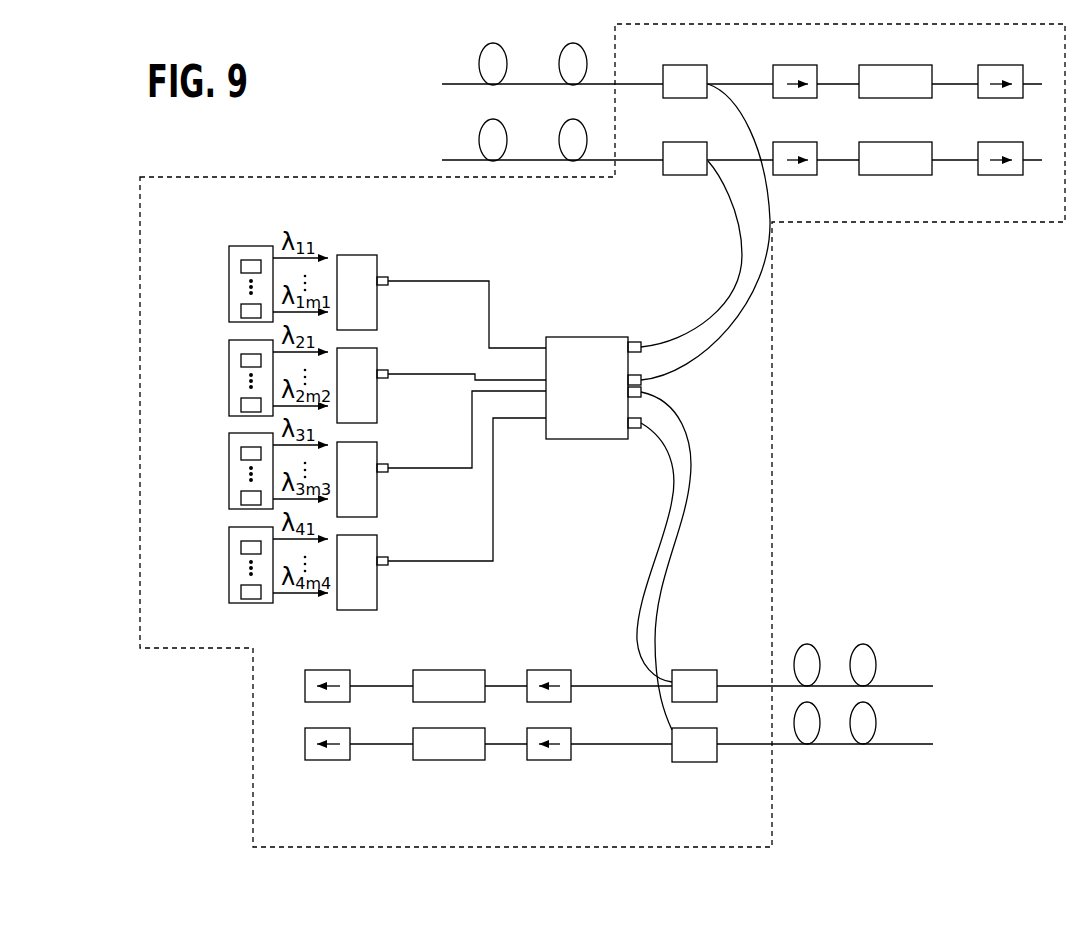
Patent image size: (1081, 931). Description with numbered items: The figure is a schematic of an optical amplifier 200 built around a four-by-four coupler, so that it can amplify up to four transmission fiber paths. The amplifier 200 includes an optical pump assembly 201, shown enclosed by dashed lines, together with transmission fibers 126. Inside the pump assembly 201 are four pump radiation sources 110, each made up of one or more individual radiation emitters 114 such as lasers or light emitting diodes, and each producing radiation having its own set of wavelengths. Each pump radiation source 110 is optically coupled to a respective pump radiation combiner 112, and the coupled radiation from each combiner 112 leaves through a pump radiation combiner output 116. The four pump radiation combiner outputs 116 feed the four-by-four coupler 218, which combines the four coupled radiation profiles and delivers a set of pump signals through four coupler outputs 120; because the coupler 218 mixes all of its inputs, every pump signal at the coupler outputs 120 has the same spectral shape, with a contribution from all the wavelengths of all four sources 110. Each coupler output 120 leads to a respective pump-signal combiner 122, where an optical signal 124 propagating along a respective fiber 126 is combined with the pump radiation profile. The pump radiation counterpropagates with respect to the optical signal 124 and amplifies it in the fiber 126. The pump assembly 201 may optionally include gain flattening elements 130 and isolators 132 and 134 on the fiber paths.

The pump radiation source 110 is at (229, 246).
The pump radiation combiner 112 is at (355, 255).
The individual radiation emitter 114 is at (241, 310).
The pump radiation combiner output 116 is at (388, 278).
The coupler output 120 is at (644, 342).
The pump-signal combiner 122 is at (693, 65).
The optical signal 124 is at (467, 72).
The transmission fiber 126 is at (506, 50).
The gain flattening element 130 is at (897, 65).
The isolator 132 is at (793, 65).
The isolator 134 is at (1003, 65).
The optical amplifier 200 is at (1001, 313).
The optical pump assembly 201 is at (773, 385).
The 4×4 coupler 218 is at (572, 337).